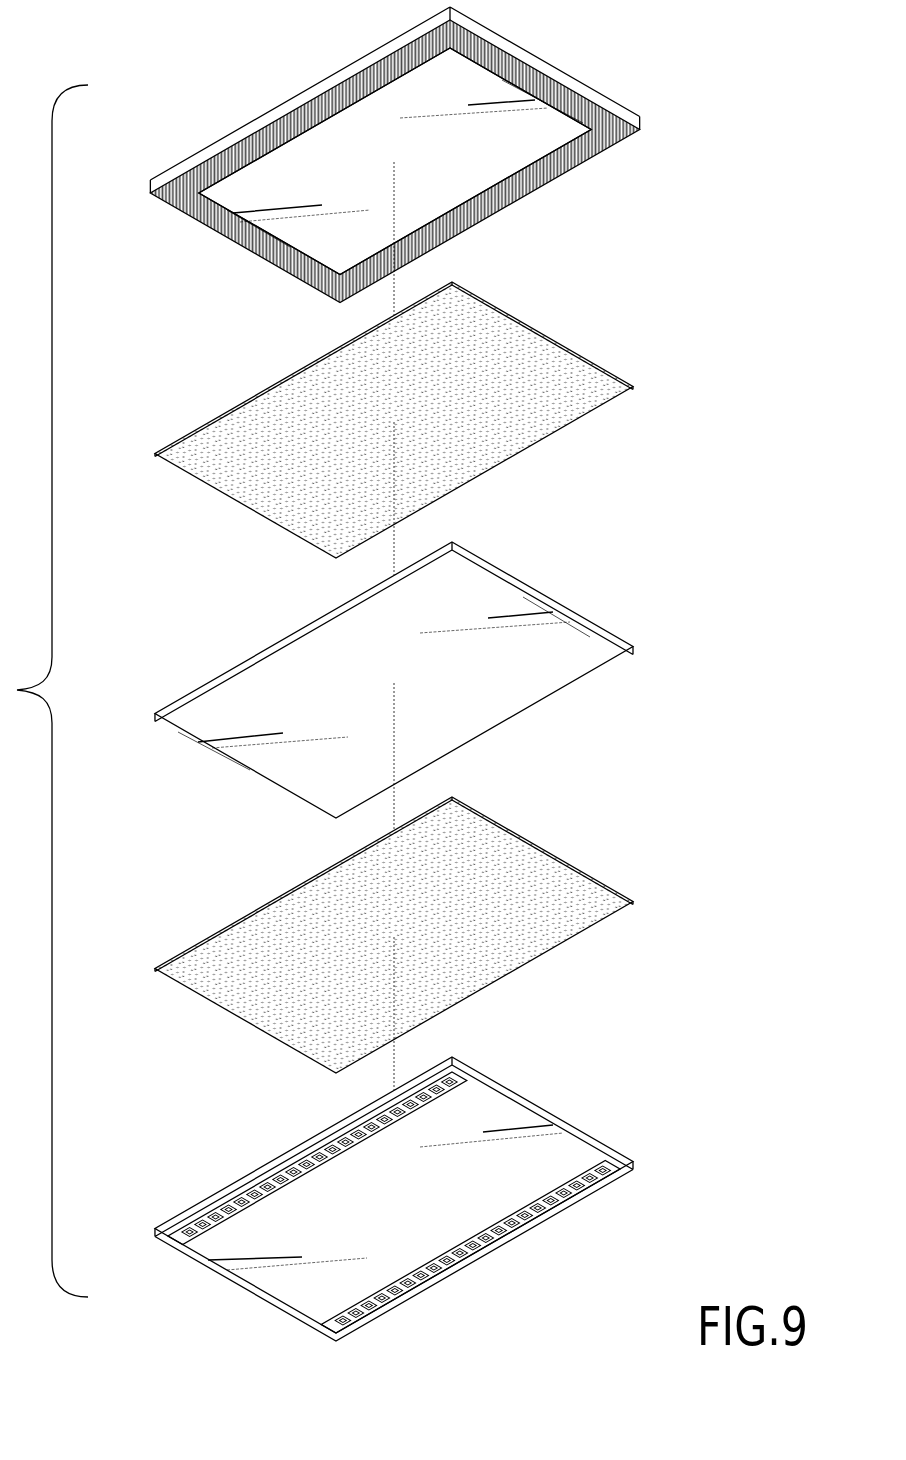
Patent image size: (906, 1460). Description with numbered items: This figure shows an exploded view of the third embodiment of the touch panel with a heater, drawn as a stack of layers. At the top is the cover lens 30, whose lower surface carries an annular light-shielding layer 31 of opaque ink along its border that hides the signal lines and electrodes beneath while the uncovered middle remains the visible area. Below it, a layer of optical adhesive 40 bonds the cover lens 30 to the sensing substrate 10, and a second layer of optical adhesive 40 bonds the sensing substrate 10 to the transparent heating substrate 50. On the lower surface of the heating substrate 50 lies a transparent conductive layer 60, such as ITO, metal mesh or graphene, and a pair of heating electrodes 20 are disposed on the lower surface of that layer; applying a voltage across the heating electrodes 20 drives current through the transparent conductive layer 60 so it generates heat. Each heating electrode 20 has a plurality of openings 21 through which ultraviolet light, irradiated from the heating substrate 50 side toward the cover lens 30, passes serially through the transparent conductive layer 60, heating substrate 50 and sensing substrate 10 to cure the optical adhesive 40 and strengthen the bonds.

The sensing substrate 10 is at (548, 602).
The heating electrode 20 is at (193, 1217).
The openings 21 is at (230, 1205).
The cover lens 30 is at (582, 88).
The light-shielding layer 31 is at (573, 163).
The optical adhesive 40 is at (540, 355).
The heating substrate 50 is at (553, 1117).
The transparent conductive layer 60 is at (285, 1287).